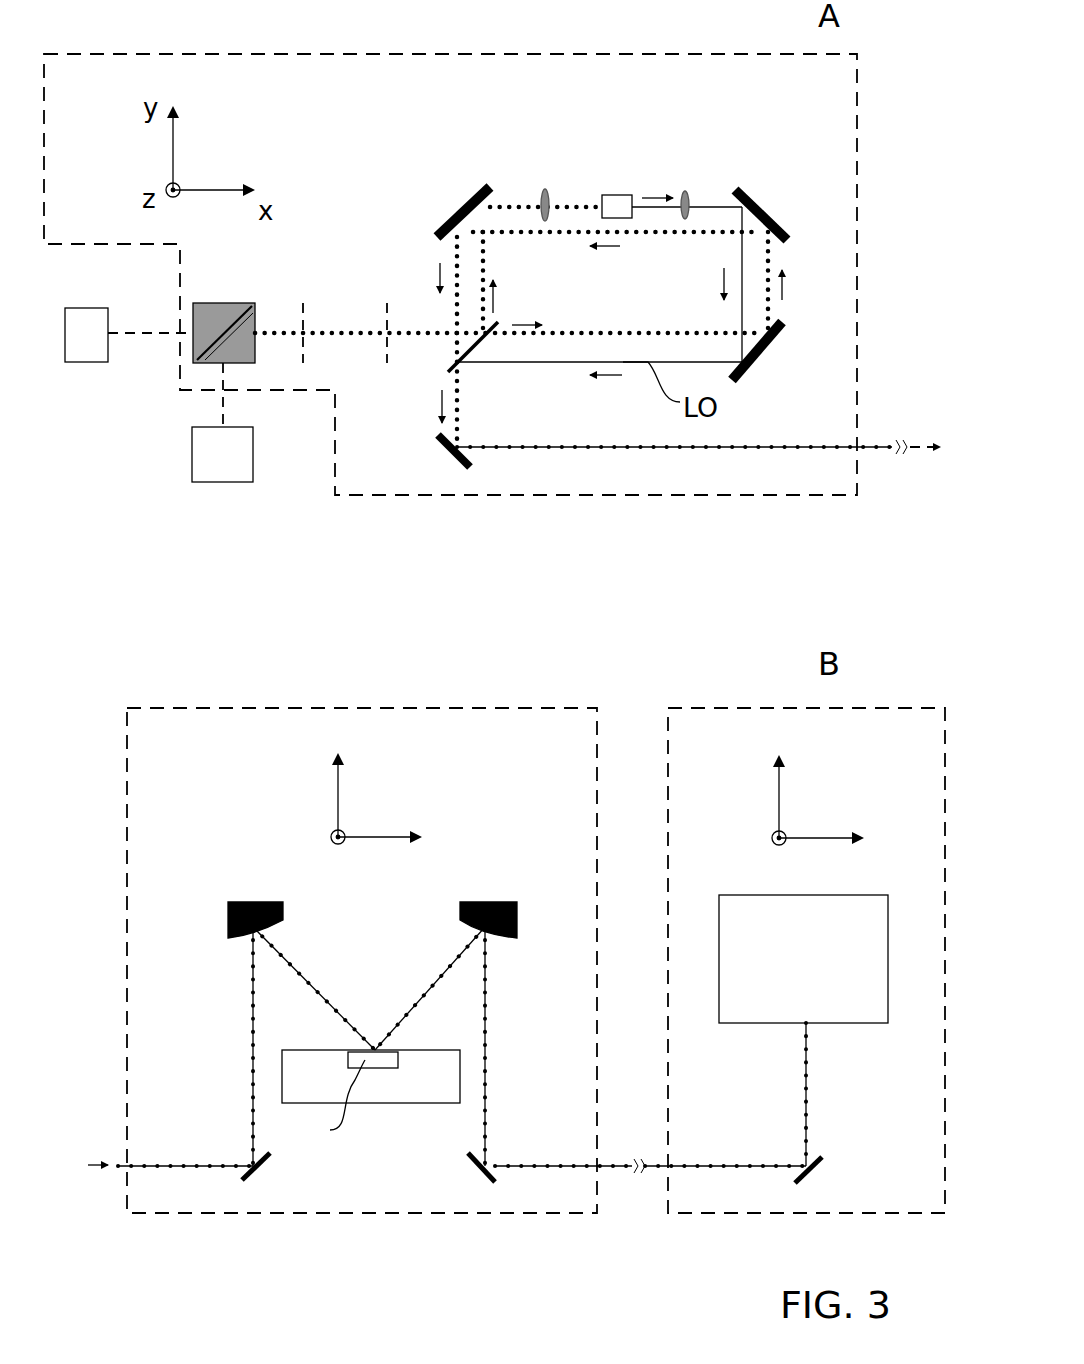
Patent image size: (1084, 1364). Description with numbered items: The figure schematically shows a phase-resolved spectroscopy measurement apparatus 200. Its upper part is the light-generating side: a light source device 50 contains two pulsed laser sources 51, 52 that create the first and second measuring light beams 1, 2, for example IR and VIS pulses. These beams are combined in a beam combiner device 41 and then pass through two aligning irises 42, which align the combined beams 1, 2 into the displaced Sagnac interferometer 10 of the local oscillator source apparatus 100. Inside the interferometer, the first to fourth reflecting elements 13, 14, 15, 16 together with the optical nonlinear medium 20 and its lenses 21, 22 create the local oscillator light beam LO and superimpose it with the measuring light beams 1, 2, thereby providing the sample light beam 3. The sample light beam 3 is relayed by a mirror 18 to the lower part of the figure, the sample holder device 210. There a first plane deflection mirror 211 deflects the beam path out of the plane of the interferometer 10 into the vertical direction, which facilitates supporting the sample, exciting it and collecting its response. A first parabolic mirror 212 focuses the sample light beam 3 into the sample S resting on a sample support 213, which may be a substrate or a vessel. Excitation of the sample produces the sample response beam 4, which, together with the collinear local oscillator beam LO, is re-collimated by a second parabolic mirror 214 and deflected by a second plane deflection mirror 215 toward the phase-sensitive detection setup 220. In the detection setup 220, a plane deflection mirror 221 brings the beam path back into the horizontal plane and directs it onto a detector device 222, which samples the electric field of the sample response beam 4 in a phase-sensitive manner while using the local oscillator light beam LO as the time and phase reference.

The first measuring light beam 1 is at (168, 327).
The second measuring light beam 2 is at (225, 413).
The sample light beam 3 is at (532, 447).
The sample response beam 4 is at (485, 1078).
The displaced Sagnac interferometer 10 is at (622, 298).
The first reflecting element 13 is at (440, 370).
The second reflecting element 14 is at (457, 213).
The third reflecting element 15 is at (768, 210).
The fourth reflecting element 16 is at (767, 362).
The mirror 18 is at (443, 455).
The optical nonlinear medium 20 is at (620, 195).
The lens 21 is at (546, 188).
The lens 22 is at (687, 190).
The beam combiner device 41 is at (228, 302).
The aligning irises 42 is at (387, 307).
The light source device 50 is at (128, 466).
The pulsed laser source 51 is at (78, 355).
The pulsed laser source 52 is at (245, 458).
The local oscillator source apparatus 100 is at (310, 123).
The phase-resolved spectroscopy measurement apparatus 200 is at (143, 538).
The sample holder device 210 is at (187, 757).
The first plane deflection mirror 211 is at (267, 1170).
The first parabolic mirror 212 is at (223, 917).
The sample support 213 is at (360, 1088).
The second parabolic mirror 214 is at (522, 917).
The second plane deflection mirror 215 is at (470, 1172).
The phase-sensitive detection setup 220 is at (795, 960).
The plane deflection mirror 221 is at (817, 1173).
The detector device 222 is at (780, 1010).